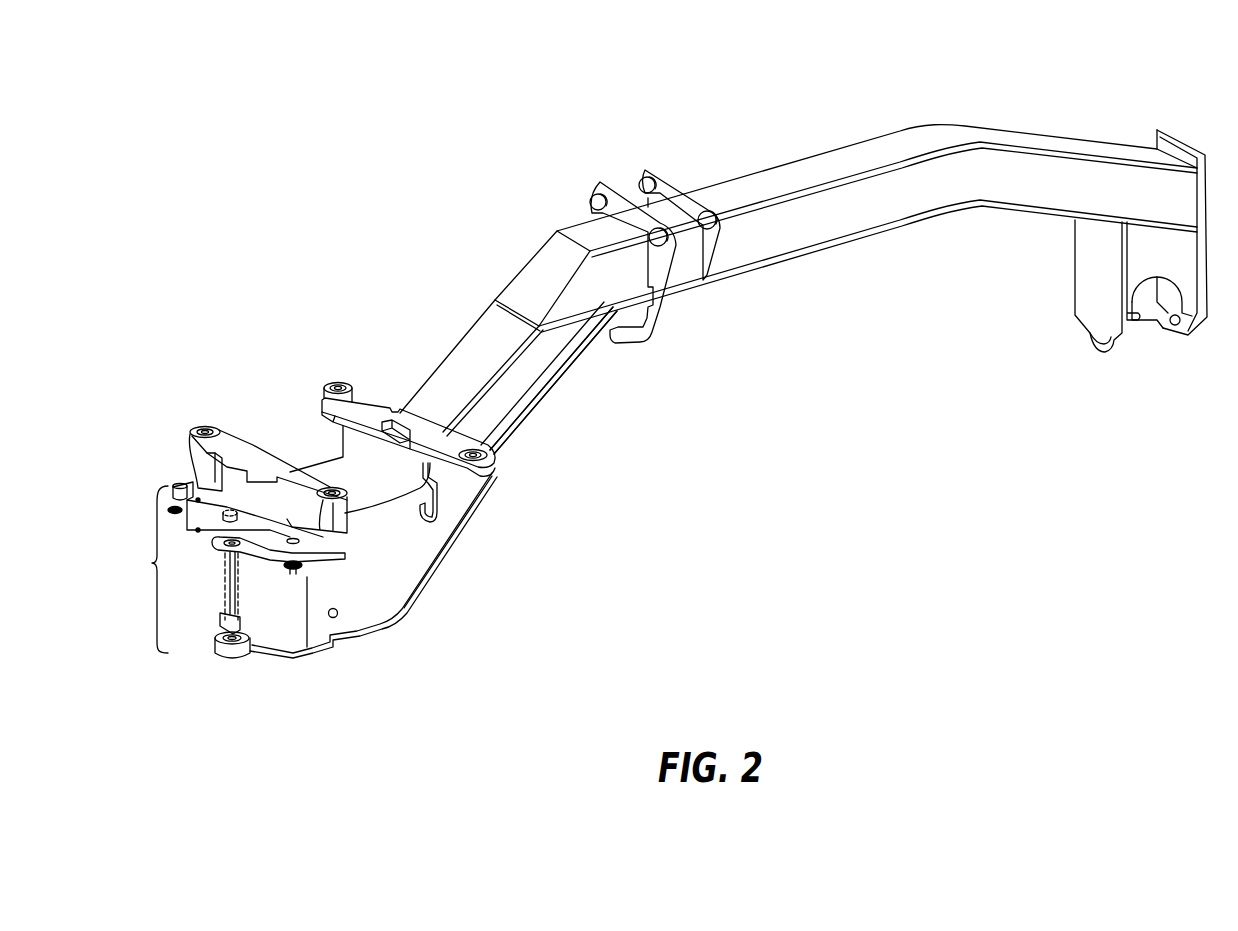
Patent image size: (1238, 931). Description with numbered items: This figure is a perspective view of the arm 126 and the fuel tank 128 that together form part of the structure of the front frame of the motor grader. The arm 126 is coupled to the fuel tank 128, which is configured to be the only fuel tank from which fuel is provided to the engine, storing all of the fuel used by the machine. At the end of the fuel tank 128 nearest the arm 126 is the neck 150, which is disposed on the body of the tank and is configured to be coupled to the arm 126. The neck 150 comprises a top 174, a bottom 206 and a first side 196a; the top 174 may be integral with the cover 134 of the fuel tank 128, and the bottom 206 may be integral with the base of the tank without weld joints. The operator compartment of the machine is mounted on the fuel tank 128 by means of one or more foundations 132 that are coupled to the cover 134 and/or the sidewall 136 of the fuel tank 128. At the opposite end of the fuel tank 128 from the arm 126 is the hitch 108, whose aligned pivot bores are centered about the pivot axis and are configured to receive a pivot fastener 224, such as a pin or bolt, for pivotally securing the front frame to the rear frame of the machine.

The hitch 108 is at (147, 562).
The arm 126 is at (868, 142).
The fuel tank 128 is at (440, 604).
The foundation 132 is at (363, 394).
The cover 134 is at (326, 466).
The sidewall 136 is at (424, 544).
The neck 150 is at (480, 324).
The top 174 is at (463, 357).
The first side 196a is at (527, 376).
The bottom 206 is at (524, 428).
The pivot fastener 224 is at (226, 586).